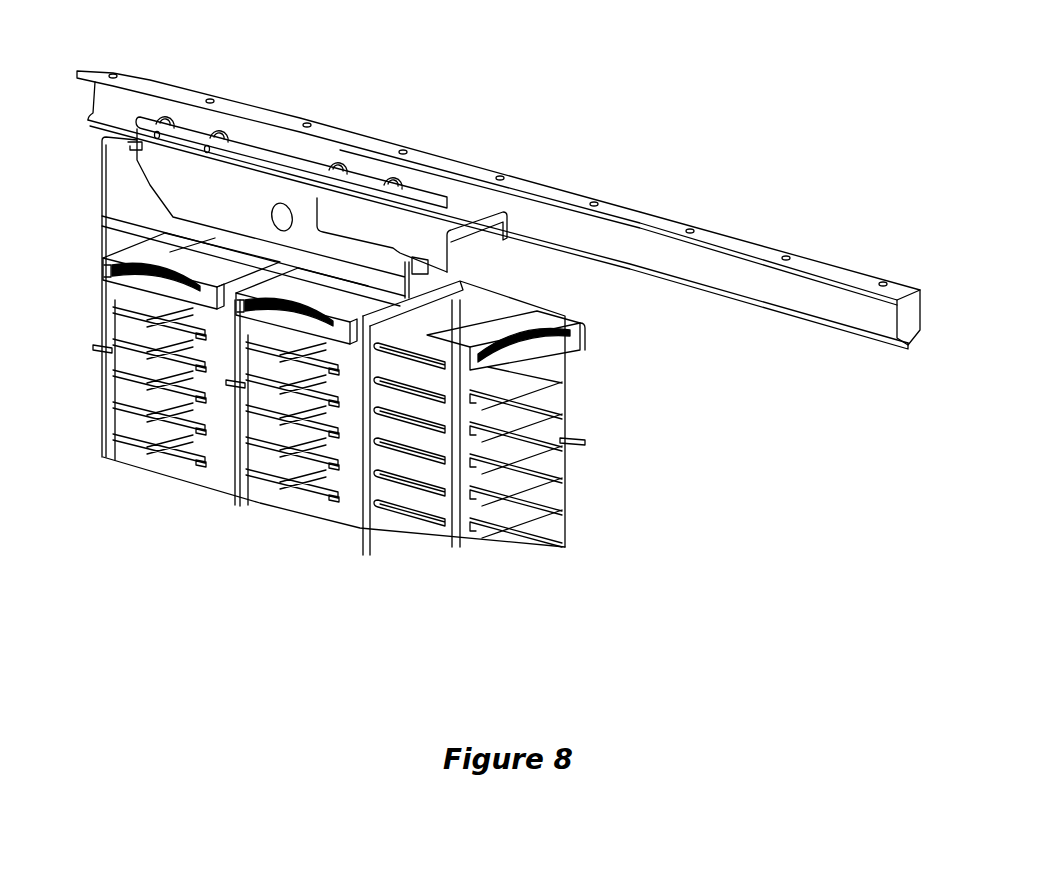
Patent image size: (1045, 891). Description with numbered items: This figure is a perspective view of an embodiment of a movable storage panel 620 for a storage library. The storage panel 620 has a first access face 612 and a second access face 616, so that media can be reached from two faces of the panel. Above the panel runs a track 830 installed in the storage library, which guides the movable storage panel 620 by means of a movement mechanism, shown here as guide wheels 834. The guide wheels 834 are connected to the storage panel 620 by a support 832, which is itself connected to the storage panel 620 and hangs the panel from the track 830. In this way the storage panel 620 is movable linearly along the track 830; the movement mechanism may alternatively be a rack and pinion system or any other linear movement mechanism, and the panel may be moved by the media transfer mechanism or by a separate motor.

The track 830 is at (676, 257).
The support 832 is at (455, 213).
The guide wheels 834 is at (393, 181).
The movable storage panel 620 is at (78, 135).
The second access face 616 is at (360, 545).
The first access face 612 is at (590, 323).